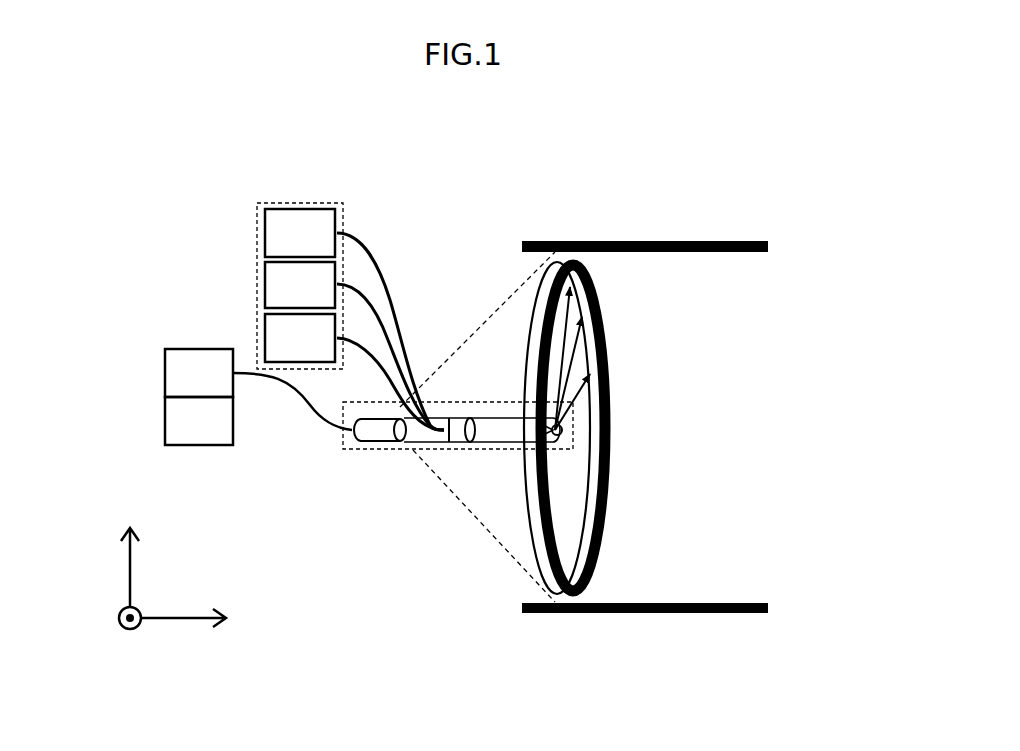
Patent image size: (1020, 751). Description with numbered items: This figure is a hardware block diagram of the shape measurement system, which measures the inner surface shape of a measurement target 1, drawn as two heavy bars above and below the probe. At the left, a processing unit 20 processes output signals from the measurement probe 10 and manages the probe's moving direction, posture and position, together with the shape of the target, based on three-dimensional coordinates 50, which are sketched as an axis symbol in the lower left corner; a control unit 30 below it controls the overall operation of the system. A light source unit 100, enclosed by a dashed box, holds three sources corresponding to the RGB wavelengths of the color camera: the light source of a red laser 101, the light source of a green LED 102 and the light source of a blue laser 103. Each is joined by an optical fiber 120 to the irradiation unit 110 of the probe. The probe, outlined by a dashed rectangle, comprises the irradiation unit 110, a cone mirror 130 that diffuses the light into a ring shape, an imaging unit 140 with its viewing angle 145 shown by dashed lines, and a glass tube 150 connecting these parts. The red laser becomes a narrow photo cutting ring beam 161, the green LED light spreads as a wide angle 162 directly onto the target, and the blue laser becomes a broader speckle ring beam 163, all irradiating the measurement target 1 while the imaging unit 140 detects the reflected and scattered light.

The measurement target 1 is at (750, 252).
The measurement probe 10 is at (337, 423).
The processing unit 20 is at (165, 372).
The control unit 30 is at (165, 418).
The three-dimensional coordinates 50 is at (170, 650).
The light source unit 100 is at (297, 203).
The light source of a red laser 101 is at (265, 238).
The light source of a green LED 102 is at (265, 285).
The light source of a blue laser 103 is at (265, 330).
The irradiation unit 110 is at (455, 445).
The optical fiber 120 is at (365, 250).
The cone mirror 130 is at (566, 448).
The imaging unit 140 is at (347, 452).
The viewing angle 145 is at (510, 560).
The glass tube 150 is at (407, 445).
The photo cutting ring beam 161 is at (614, 472).
The wide angle 162 is at (500, 485).
The speckle ring beam 163 is at (603, 540).